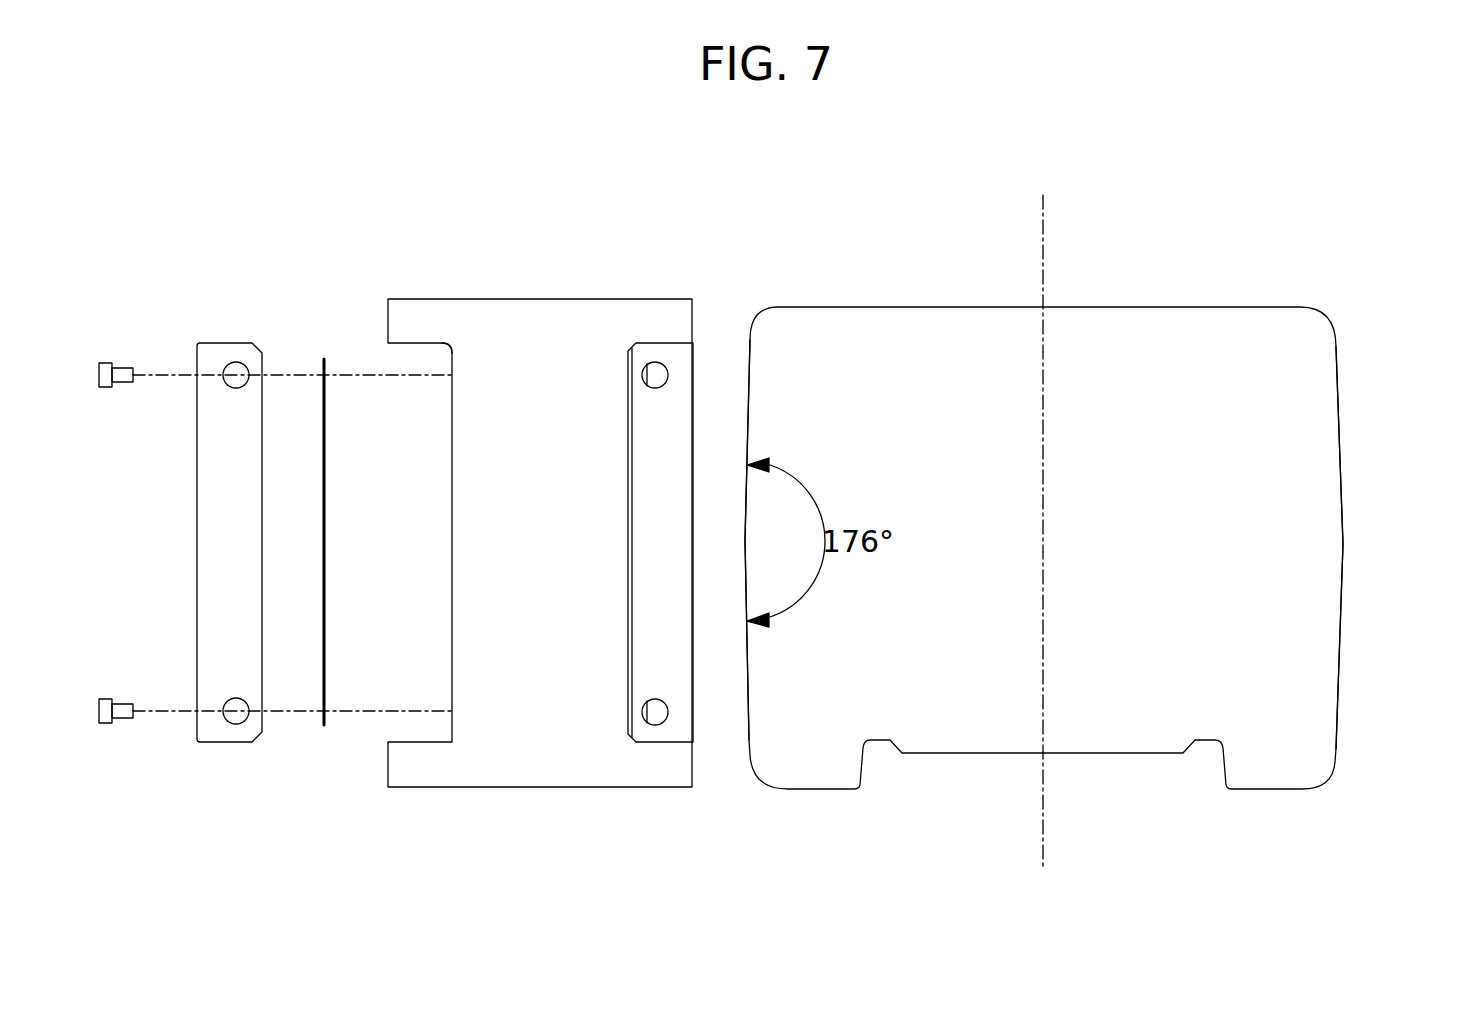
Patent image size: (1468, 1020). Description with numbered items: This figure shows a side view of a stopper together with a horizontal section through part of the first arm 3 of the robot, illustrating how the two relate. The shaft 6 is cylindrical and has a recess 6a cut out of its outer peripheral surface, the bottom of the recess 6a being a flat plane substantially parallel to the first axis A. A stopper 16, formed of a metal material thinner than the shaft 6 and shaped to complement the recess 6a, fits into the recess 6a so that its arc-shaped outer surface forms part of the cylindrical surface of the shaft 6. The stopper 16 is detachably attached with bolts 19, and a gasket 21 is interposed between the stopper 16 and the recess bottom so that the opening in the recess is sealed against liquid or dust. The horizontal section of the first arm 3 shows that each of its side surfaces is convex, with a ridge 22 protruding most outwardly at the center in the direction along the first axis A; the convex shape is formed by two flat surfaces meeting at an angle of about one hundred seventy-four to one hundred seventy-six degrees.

The first arm 3 is at (1093, 754).
The shaft 6 is at (667, 801).
The recess 6a is at (452, 363).
The stopper 16 is at (197, 545).
The bolt 19 is at (105, 362).
The gasket 21 is at (326, 545).
The ridge 22 is at (745, 540).
The first axis A is at (1045, 250).